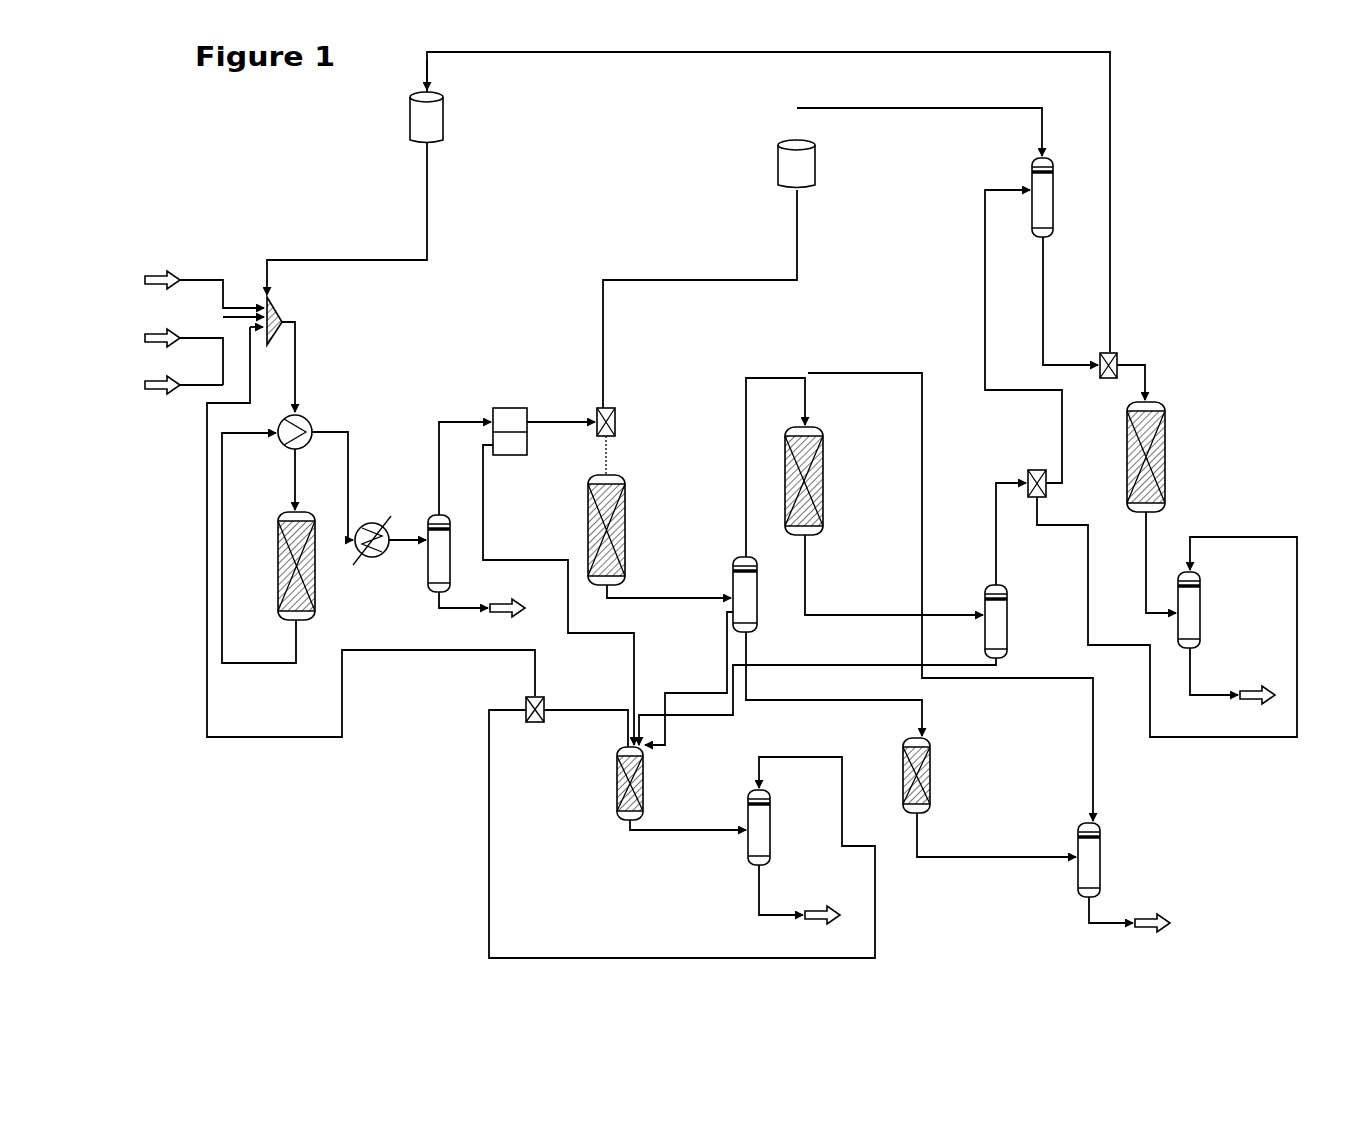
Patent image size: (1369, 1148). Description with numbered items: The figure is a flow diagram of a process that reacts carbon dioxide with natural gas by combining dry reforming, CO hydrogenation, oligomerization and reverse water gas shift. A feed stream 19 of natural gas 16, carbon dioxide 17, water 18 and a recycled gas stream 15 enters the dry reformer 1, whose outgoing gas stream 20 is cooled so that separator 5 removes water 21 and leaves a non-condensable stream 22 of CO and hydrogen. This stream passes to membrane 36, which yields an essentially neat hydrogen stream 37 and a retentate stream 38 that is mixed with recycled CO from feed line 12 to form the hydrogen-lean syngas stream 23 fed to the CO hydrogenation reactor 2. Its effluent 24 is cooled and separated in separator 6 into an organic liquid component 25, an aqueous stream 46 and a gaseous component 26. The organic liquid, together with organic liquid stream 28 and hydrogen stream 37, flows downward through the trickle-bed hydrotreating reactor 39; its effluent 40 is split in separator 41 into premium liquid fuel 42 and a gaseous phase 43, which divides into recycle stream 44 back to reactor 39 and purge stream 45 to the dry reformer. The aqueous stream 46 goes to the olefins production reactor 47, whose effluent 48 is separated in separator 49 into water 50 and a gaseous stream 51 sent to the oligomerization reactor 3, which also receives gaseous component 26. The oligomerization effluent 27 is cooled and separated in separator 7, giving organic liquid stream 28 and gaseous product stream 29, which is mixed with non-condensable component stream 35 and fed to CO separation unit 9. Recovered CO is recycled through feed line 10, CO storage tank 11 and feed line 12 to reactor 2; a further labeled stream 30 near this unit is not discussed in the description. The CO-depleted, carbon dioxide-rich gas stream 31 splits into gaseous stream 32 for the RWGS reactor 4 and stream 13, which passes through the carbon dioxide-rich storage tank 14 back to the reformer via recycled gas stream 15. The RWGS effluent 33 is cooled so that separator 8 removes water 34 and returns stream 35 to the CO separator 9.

The dry reforming reactor 1 is at (271, 552).
The CO hydrogenation reactor 2 is at (617, 527).
The oligomerization reactor 3 is at (859, 468).
The RWGS reactor 4 is at (1208, 452).
The separator 5 is at (448, 537).
The separator 6 is at (759, 594).
The separator 7 is at (1032, 615).
The separator 8 is at (1226, 602).
The CO separation unit 9 is at (1068, 188).
The feed line 10 is at (822, 238).
The CO storage tank 11 is at (768, 151).
The CO feed line 12 is at (728, 257).
The carbon dioxide-rich gaseous stream line 13 is at (783, 202).
The carbon dioxide-rich storage tank 14 is at (419, 141).
The recycled gas stream 15 is at (347, 177).
The natural gas feed 16 is at (185, 283).
The carbon dioxide feed 17 is at (165, 352).
The water feed 18 is at (165, 375).
The feed stream 19 is at (371, 529).
The outgoing gas stream 20 is at (369, 486).
The water 21 is at (487, 593).
The non-condensable stream 22 is at (465, 451).
The hydrogen-lean syngas stream 23 is at (621, 441).
The effluent 24 is at (669, 582).
The organic liquid component 25 is at (689, 678).
The gaseous component 26 is at (762, 467).
The effluent 27 is at (894, 575).
The organic liquid stream 28 is at (817, 687).
The gaseous product stream 29 is at (996, 534).
The recycle stream to CO PSA 30 is at (1023, 336).
The CO-depleted, carbon dioxide-rich gas stream 31 is at (1070, 301).
The gaseous stream 32 is at (1130, 361).
The effluent 33 is at (1146, 562).
The water 34 is at (1234, 676).
The non-condensable component stream 35 is at (1167, 617).
The membrane 36 is at (516, 383).
The hydrogen stream 37 is at (558, 595).
The membrane retentate stream 38 is at (561, 403).
The hydrotreating reactor 39 is at (580, 783).
The effluent 40 is at (688, 812).
The separator 41 is at (795, 822).
The premium liquid fuel 42 is at (808, 894).
The gaseous phase 43 is at (682, 834).
The recycle stream 44 is at (577, 712).
The purge stream 45 is at (473, 669).
The aqueous stream 46 is at (834, 684).
The olefins production reactor 47 is at (961, 764).
The effluent 48 is at (996, 835).
The separator 49 is at (1129, 852).
The water 50 is at (1136, 912).
The gaseous stream 51 is at (965, 597).